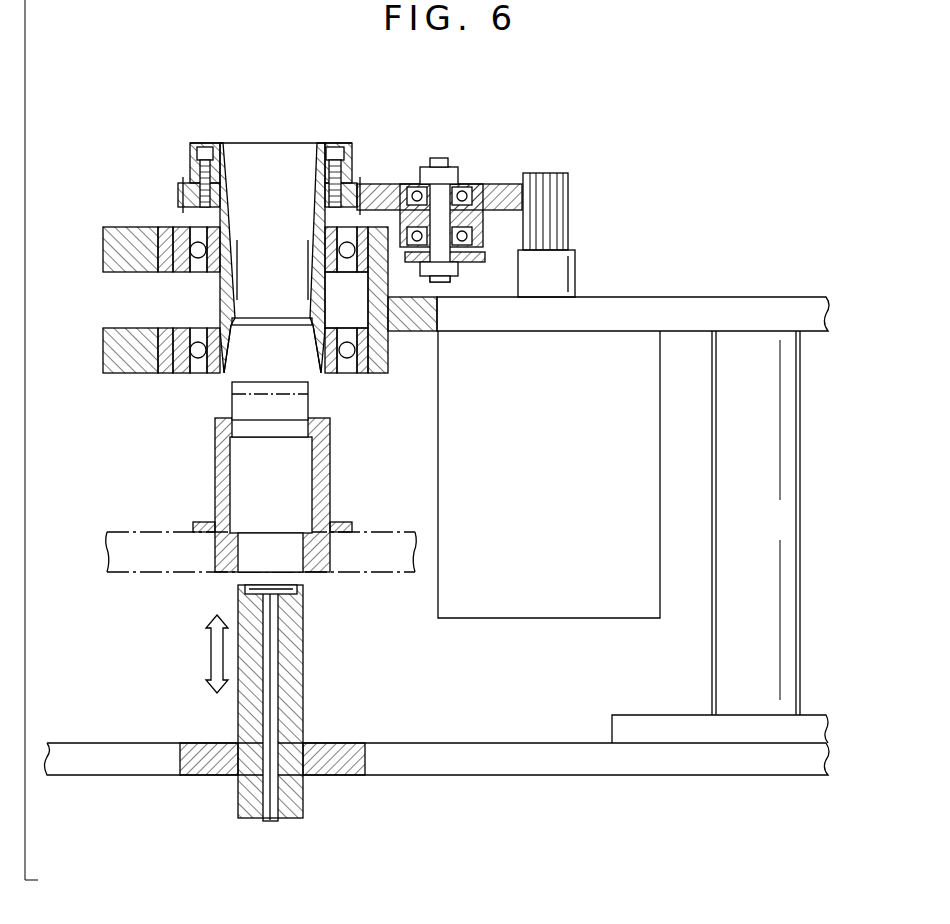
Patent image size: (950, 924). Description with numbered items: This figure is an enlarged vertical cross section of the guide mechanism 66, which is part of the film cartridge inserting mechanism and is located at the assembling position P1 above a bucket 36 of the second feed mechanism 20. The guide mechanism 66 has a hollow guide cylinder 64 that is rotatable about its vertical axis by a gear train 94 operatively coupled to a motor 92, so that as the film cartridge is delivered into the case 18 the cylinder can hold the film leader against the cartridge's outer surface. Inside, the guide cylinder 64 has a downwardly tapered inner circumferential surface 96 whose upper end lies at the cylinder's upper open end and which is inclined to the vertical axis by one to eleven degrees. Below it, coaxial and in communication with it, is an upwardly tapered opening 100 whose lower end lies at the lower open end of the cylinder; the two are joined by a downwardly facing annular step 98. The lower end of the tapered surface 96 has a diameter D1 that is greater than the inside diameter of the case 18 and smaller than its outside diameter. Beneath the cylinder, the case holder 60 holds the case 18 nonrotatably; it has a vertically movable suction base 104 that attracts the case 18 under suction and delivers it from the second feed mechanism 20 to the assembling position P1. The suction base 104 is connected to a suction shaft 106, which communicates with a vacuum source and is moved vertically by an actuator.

The assembling position P1 is at (208, 118).
The guide cylinder 64 is at (346, 138).
The guide mechanism 66 is at (423, 110).
The gear train 94 is at (491, 183).
The downwardly tapered inner circumferential surface 96 is at (317, 214).
The diameter of lower end of tapered inner surface D1 is at (306, 253).
The annular step 98 is at (234, 323).
The upwardly tapered opening 100 is at (226, 373).
The case 18 is at (300, 408).
The bucket 36 is at (327, 477).
The second feed mechanism 20 is at (155, 530).
The vertically movable suction base 104 is at (298, 590).
The case holder 60 is at (314, 676).
The motor 92 is at (612, 603).
The suction shaft 106 is at (270, 822).